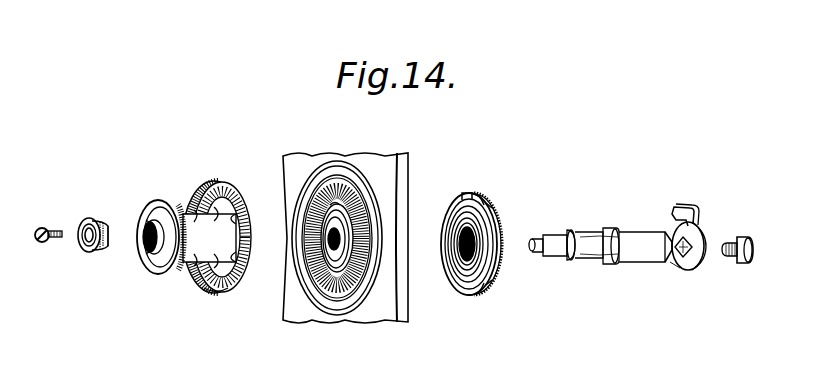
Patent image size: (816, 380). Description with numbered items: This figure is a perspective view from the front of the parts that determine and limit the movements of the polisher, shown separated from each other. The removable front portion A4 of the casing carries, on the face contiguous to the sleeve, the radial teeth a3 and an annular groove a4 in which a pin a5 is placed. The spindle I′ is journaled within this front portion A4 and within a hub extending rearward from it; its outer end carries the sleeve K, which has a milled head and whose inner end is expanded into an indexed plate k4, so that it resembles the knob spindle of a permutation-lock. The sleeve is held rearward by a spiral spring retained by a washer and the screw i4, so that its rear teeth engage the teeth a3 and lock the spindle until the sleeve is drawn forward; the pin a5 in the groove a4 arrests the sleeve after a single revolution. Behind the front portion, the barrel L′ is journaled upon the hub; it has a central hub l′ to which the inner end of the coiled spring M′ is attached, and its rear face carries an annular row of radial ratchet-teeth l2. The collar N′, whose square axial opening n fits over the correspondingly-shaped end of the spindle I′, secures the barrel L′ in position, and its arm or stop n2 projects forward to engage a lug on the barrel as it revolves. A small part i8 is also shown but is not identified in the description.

The screw i4 is at (48, 233).
The bushing i8 is at (100, 222).
The sleeve K is at (194, 237).
The indexed plate k4 is at (212, 298).
The removable front portion of the casing A4 is at (385, 305).
The pin a5 is at (308, 196).
The annular groove a4 is at (414, 232).
The radial teeth a3 is at (312, 288).
The coiled spring M′ is at (460, 285).
The central hub of the barrel l′ is at (458, 220).
The barrel L′ is at (492, 278).
The radial ratchet-teeth l2 is at (500, 214).
The spindle I′ is at (633, 233).
The collar N′ is at (698, 268).
The square axial opening n is at (676, 266).
The arm or stop n2 is at (694, 212).